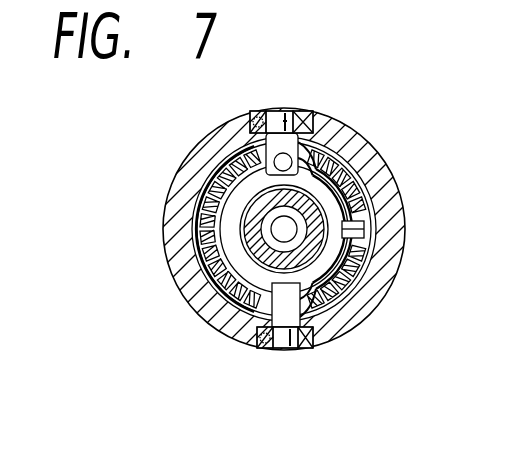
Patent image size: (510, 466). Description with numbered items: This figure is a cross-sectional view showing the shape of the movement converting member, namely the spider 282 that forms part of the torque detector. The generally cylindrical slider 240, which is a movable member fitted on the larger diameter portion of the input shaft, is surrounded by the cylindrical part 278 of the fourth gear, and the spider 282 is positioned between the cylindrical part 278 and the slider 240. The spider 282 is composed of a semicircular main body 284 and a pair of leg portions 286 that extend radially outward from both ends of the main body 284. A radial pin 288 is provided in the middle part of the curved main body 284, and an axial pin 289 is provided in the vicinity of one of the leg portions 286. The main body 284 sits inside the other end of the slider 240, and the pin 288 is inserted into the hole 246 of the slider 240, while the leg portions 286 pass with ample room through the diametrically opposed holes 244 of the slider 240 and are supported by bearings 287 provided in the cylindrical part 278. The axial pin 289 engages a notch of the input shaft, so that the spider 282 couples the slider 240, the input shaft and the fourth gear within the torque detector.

The slider 240 is at (343, 151).
The notches 244 is at (247, 128).
The notch 246 is at (355, 219).
The cylindrical part 278 is at (203, 167).
The spider 282 is at (262, 284).
The main body 284 is at (340, 170).
The leg portions 286 is at (285, 110).
The bearings 287 is at (258, 110).
The pin 288 is at (365, 236).
The pin 289 is at (291, 156).